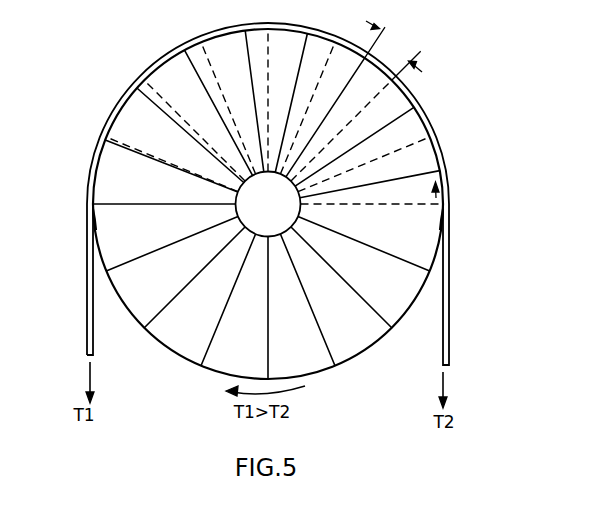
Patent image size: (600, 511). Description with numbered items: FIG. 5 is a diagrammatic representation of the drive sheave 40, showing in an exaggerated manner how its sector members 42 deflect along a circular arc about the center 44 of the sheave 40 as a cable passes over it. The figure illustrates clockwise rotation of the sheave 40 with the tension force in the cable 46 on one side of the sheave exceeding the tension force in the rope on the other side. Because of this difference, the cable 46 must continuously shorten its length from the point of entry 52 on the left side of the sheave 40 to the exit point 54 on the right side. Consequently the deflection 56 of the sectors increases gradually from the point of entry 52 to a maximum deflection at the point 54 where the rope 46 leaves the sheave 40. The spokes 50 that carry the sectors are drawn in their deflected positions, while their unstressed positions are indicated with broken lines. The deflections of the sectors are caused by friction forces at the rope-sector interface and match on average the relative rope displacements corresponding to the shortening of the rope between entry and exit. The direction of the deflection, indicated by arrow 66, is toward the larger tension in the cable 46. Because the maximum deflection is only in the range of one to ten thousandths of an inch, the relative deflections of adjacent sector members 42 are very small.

The sheave 40 is at (268, 205).
The sector members 42 is at (144, 329).
The center 44 is at (262, 209).
The cable 46 is at (452, 318).
The spokes 50 is at (230, 297).
The point of entry 52 is at (95, 217).
The exit point 54 is at (438, 222).
The deflection 56 is at (393, 53).
The arrow 66 is at (445, 194).